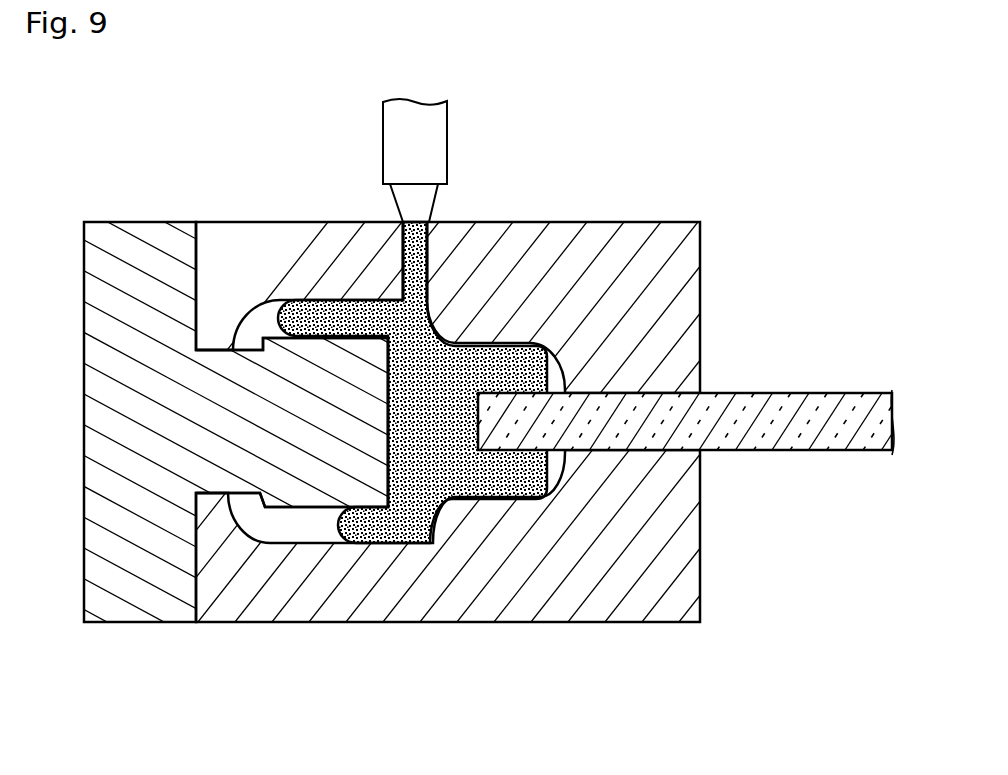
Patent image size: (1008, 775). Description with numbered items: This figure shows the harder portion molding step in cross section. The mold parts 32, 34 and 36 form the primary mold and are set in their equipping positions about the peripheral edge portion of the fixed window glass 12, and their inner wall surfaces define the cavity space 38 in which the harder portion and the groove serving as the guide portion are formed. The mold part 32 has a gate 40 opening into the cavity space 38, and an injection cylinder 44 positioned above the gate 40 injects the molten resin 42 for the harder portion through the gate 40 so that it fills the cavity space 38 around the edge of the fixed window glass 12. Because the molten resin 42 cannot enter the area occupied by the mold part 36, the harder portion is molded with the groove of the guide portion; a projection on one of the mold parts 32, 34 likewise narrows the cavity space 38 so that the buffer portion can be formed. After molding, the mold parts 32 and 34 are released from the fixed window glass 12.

The fixed window glass 12 is at (806, 394).
The mold part 32 is at (567, 223).
The mold part 34 is at (445, 623).
The mold part 36 is at (142, 223).
The cavity space 38 is at (308, 538).
The gate 40 is at (417, 251).
The molten resin 42 is at (448, 436).
The injection cylinder 44 is at (438, 140).